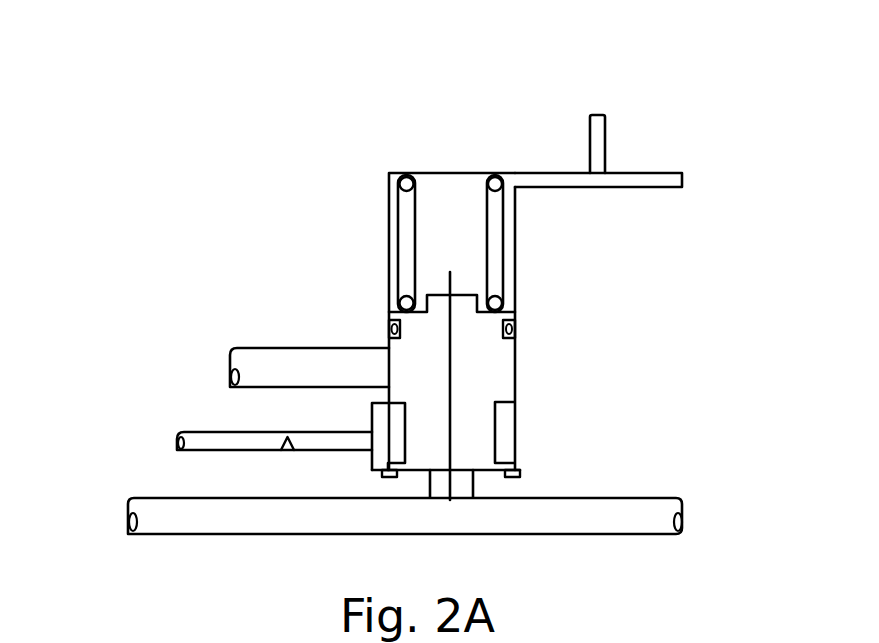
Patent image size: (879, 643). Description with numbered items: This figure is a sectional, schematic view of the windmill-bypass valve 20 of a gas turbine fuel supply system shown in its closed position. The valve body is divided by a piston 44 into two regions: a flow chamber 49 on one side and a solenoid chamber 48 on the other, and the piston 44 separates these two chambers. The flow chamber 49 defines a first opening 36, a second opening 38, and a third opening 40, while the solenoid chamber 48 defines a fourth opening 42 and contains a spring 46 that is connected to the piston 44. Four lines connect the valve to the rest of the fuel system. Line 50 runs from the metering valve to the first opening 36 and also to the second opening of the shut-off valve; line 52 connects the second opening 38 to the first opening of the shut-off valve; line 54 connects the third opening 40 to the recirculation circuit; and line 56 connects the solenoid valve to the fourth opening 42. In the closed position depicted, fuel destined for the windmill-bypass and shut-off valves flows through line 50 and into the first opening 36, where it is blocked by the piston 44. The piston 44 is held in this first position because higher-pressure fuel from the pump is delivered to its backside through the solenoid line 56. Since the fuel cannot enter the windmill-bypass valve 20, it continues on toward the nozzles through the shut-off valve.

The windmill-bypass valve 20 is at (380, 342).
The first opening 36 is at (458, 469).
The second opening 38 is at (375, 440).
The third opening 40 is at (358, 348).
The fourth opening 42 is at (512, 180).
The piston 44 is at (413, 330).
The spring 46 is at (407, 198).
The solenoid chamber 48 is at (458, 203).
The flow chamber 49 is at (507, 427).
The line 50 is at (258, 515).
The line 52 is at (210, 447).
The line 54 is at (302, 348).
The line 56 is at (602, 188).